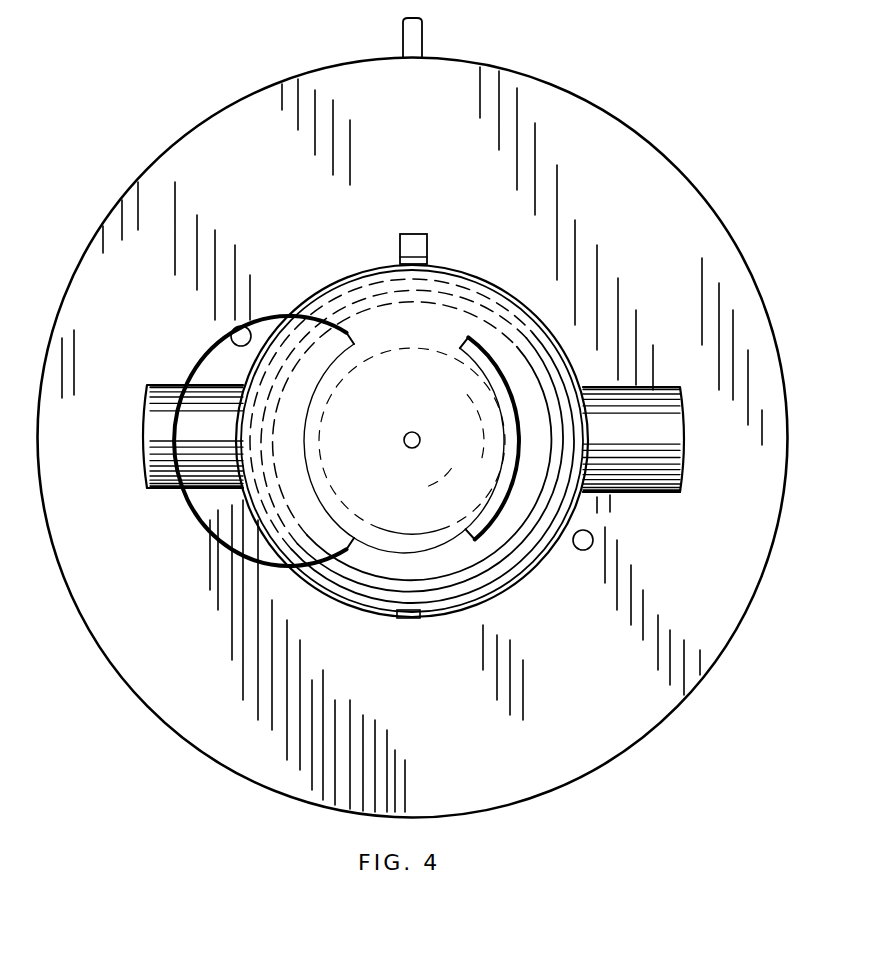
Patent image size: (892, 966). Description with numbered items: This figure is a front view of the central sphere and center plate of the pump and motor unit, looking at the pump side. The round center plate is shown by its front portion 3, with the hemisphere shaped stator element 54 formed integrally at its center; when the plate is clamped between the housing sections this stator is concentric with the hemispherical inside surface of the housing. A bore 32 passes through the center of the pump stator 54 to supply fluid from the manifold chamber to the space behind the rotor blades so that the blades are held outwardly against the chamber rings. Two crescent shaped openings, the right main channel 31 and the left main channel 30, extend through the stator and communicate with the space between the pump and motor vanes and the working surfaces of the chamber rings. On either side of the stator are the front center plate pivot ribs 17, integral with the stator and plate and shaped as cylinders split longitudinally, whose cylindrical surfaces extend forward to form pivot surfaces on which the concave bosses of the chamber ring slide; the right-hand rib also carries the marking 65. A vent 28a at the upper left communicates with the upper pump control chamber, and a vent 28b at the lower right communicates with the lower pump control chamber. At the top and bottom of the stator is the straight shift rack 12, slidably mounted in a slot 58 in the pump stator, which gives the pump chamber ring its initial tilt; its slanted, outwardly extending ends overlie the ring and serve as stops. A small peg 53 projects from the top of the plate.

The front portion 3 is at (437, 172).
The peg 53 is at (445, 72).
The slot 58 is at (430, 264).
The hemisphere shaped stator element 54 is at (422, 339).
The right main channel 31 is at (333, 354).
The left main channel 30 is at (468, 338).
The bore 32 is at (408, 445).
The shift rack 12 is at (420, 245).
The vent 28a is at (232, 338).
The vent 28b is at (578, 552).
The front center plate pivot ribs 17 is at (146, 445).
The right cylinder 65 is at (628, 443).